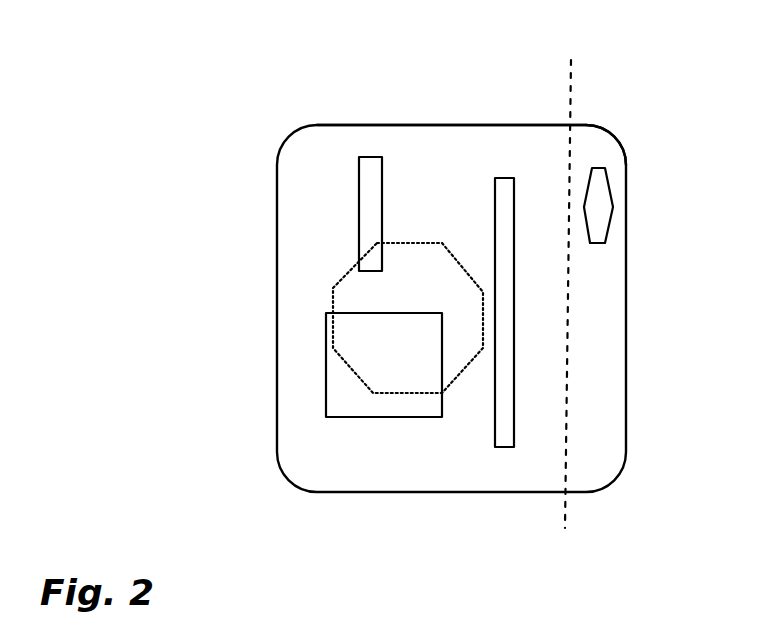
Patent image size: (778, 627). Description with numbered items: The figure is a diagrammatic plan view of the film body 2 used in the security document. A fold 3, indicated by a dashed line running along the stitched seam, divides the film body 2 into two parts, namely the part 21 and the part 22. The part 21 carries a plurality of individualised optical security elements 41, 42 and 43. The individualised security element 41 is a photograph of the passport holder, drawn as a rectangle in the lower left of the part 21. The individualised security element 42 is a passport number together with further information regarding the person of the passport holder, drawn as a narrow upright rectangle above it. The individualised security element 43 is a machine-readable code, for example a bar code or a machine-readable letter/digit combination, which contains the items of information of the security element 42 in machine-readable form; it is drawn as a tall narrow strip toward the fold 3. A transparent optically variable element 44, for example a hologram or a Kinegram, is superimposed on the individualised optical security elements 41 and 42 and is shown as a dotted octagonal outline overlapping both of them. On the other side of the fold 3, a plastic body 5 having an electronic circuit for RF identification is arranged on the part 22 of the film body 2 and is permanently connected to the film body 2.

The film body 2 is at (451, 257).
The part of the film body 21 is at (368, 124).
The part of the film body 22 is at (602, 150).
The fold 3 is at (562, 310).
The individualised optical security element 41 is at (326, 392).
The individualised optical security element 42 is at (372, 197).
The individualised optical security element 43 is at (496, 448).
The transparent optically variable element 44 is at (347, 297).
The plastic body 5 is at (602, 196).